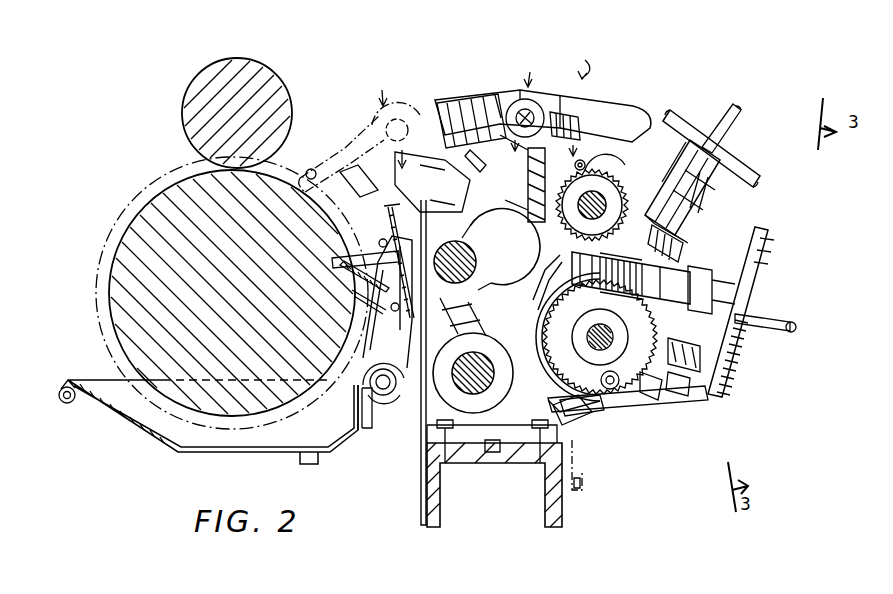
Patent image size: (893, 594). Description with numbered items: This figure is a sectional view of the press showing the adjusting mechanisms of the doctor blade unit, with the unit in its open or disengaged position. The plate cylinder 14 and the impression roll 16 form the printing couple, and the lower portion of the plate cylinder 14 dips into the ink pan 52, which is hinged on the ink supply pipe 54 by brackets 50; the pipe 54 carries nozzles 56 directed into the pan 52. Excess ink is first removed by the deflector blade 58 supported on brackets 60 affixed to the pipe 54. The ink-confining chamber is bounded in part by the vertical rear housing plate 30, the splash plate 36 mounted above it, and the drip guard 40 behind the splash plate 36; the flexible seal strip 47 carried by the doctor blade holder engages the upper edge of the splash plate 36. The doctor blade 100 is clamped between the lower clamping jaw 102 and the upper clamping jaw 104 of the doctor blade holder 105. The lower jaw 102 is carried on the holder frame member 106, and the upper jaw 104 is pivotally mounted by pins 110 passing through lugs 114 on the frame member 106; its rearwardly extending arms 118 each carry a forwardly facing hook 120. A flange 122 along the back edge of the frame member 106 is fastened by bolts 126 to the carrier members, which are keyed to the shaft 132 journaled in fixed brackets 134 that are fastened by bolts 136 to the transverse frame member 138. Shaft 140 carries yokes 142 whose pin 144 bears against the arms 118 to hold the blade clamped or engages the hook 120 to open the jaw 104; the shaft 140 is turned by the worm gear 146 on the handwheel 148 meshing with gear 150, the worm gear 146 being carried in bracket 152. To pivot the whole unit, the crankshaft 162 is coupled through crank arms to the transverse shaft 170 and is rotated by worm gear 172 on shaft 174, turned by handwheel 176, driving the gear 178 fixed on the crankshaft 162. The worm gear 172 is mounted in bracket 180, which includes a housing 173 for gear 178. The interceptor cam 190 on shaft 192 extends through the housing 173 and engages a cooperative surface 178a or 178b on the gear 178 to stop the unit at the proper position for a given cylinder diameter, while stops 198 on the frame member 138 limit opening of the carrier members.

The plate cylinder 14 is at (242, 302).
The impression roll 16 is at (271, 89).
The vertical rear housing plate 30 is at (421, 497).
The splash plate 36 is at (340, 274).
The drip guard 40 is at (380, 260).
The flexible seal strip 47 is at (389, 214).
The brackets 50 is at (338, 453).
The ink pan 52 is at (157, 436).
The pipe 54 is at (364, 438).
The nozzles 56 is at (370, 390).
The deflector blade 58 is at (352, 292).
The brackets 60 is at (380, 331).
The doctor blade 100 is at (300, 172).
The lower clamping jaw 102 is at (352, 147).
The upper clamping jaw 104 is at (462, 74).
The doctor blade holder 105 is at (573, 55).
The holder frame member 106 is at (402, 150).
The pins 110 is at (527, 116).
The lugs 114 is at (500, 124).
The rearwardly extending arms 118 is at (467, 127).
The hook 120 is at (733, 104).
The flange 122 is at (533, 214).
The bolts 126 is at (592, 199).
The shaft 132 is at (463, 378).
The fixed brackets 134 is at (553, 413).
The bolts 136 is at (536, 432).
The transverse frame member 138 is at (560, 523).
The shaft 140 is at (607, 196).
The yokes 142 is at (573, 145).
The pin 144 is at (636, 128).
The worm gear 146 is at (672, 238).
The handwheel 148 is at (748, 168).
The gear 150 is at (698, 138).
The bracket 152 is at (690, 214).
The crankshaft 162 is at (594, 352).
The transverse shaft 170 is at (479, 252).
The worm gear 172 is at (630, 308).
The housing 173 is at (660, 400).
The shaft 174 is at (662, 266).
The handwheel 176 is at (770, 236).
The gear 178 is at (668, 352).
The cooperative surface 178a is at (660, 375).
The cooperative surface 178b is at (640, 385).
The bracket 180 is at (722, 335).
The interceptor cam 190 is at (620, 390).
The shaft 192 is at (612, 400).
The stops 198 is at (584, 468).